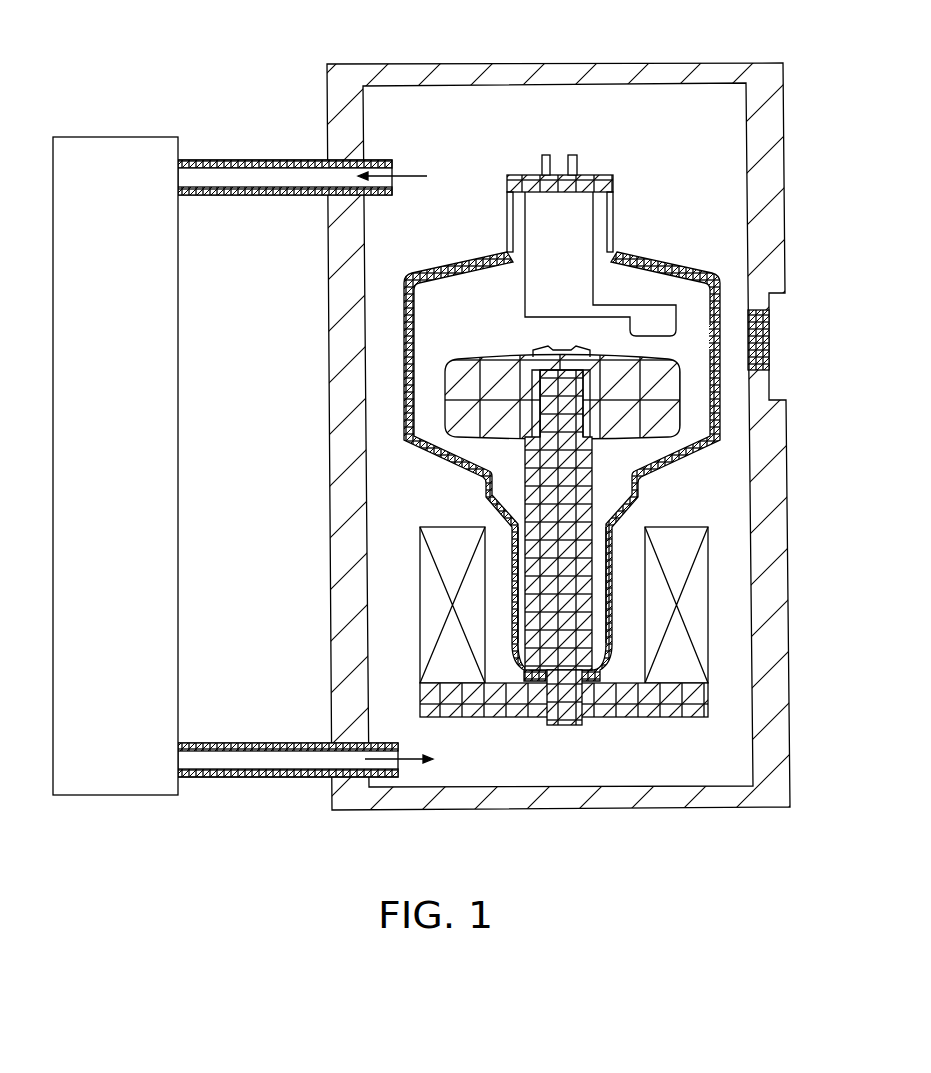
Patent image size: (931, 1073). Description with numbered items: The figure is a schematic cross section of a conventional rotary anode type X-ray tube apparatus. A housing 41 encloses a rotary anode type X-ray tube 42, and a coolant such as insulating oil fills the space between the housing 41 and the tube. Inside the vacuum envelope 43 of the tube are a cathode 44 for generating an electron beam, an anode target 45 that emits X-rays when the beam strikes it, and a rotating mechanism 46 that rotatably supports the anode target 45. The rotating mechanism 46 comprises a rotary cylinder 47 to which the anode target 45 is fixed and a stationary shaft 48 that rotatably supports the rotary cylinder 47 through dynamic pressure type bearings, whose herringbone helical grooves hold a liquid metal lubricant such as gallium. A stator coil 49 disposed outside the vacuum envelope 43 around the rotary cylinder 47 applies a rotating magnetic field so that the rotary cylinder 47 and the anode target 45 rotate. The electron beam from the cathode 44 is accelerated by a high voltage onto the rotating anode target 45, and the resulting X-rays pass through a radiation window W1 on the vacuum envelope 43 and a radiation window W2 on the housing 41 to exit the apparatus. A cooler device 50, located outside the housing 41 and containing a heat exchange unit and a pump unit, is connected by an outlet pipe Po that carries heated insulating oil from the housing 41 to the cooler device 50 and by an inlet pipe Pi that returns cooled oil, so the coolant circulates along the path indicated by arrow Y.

The housing 41 is at (493, 64).
The rotary anode type X-ray tube 42 is at (632, 193).
The vacuum envelope 43 is at (457, 258).
The cathode 44 is at (645, 303).
The anode target 45 is at (487, 355).
The rotating mechanism 46 is at (507, 465).
The rotary cylinder 47 is at (600, 442).
The stationary shaft 48 is at (582, 485).
The stator coil 49 is at (700, 597).
The cooler device 50 is at (117, 135).
The outlet pipe Po is at (273, 160).
The inlet pipe Pi is at (267, 778).
The arrow Y is at (413, 175).
The radiation window W1 is at (722, 334).
The radiation window W2 is at (768, 351).